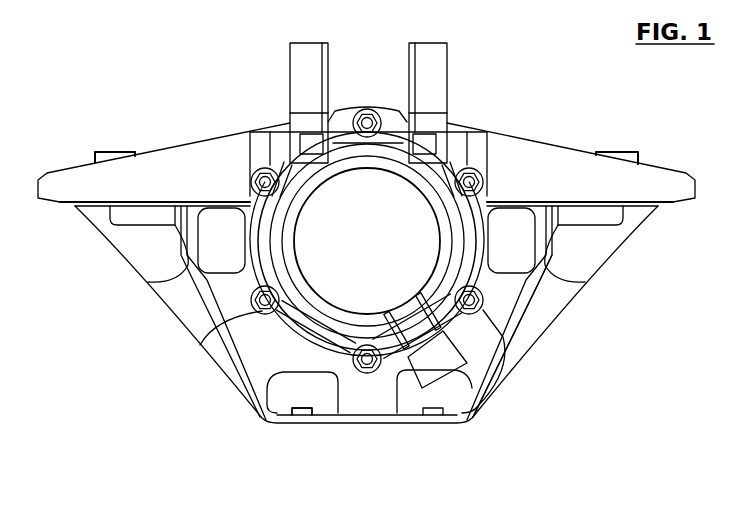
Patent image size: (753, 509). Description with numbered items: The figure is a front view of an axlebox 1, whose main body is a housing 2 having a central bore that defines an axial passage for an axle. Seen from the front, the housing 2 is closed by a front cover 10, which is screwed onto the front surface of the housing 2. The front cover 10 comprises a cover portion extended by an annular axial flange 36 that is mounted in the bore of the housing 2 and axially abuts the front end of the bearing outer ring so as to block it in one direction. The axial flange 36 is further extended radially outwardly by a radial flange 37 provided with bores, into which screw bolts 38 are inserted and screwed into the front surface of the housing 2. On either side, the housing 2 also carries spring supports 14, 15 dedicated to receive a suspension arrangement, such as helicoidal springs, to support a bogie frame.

The axlebox 1 is at (226, 104).
The housing 2 is at (421, 434).
The front cover 10 is at (290, 335).
The spring support 14 is at (622, 152).
The spring support 15 is at (117, 148).
The annular axial flange 36 is at (498, 318).
The radial flange 37 is at (322, 413).
The screw bolts 38 is at (480, 348).